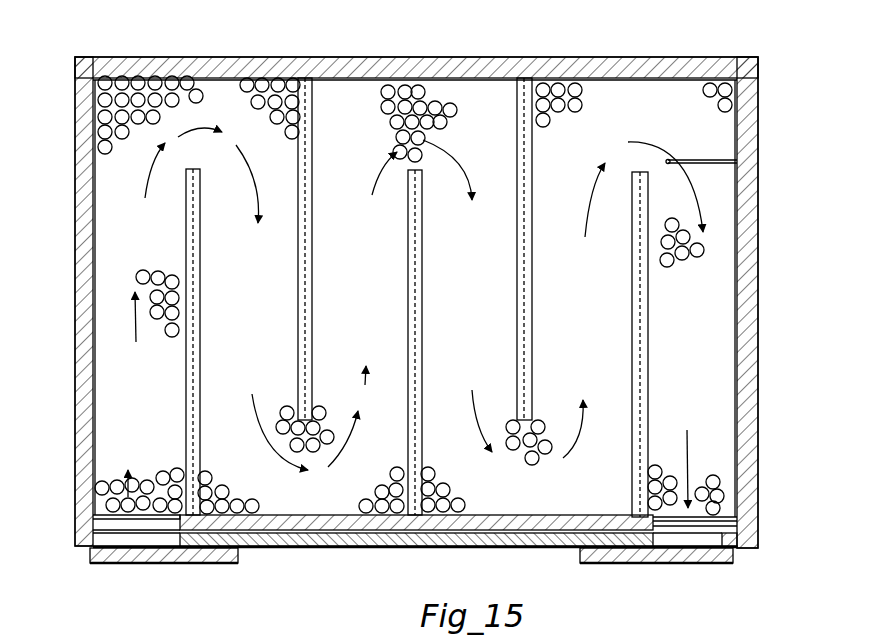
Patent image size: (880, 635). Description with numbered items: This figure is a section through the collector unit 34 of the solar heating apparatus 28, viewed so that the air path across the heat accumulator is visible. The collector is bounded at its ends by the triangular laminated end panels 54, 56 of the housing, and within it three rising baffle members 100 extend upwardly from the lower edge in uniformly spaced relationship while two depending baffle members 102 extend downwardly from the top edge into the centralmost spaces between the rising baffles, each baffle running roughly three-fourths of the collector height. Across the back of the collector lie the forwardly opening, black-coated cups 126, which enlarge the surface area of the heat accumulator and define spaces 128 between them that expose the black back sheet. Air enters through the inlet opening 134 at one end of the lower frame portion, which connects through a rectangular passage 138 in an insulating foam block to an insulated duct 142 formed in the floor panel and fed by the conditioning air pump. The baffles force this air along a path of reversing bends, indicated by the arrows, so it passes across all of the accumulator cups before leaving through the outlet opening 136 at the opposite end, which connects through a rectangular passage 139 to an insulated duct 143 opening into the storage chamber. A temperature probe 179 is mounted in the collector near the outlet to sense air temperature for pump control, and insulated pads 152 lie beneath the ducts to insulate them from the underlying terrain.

The solar heating apparatus 28 is at (768, 128).
The collector unit 34 is at (612, 98).
The end panel 54 is at (80, 234).
The end panel 56 is at (745, 248).
The rising baffle member 100 is at (200, 332).
The depending baffle member 102 is at (360, 312).
The probe 179 is at (668, 160).
The spaces 128 is at (168, 450).
The cups 126 is at (103, 490).
The inlet opening 134 is at (93, 517).
The rectangular passage 138 is at (110, 540).
The insulated duct 142 is at (152, 540).
The outlet opening 136 is at (707, 495).
The rectangular passage 139 is at (715, 527).
The insulated duct 143 is at (727, 547).
The insulated pad 152 is at (215, 563).